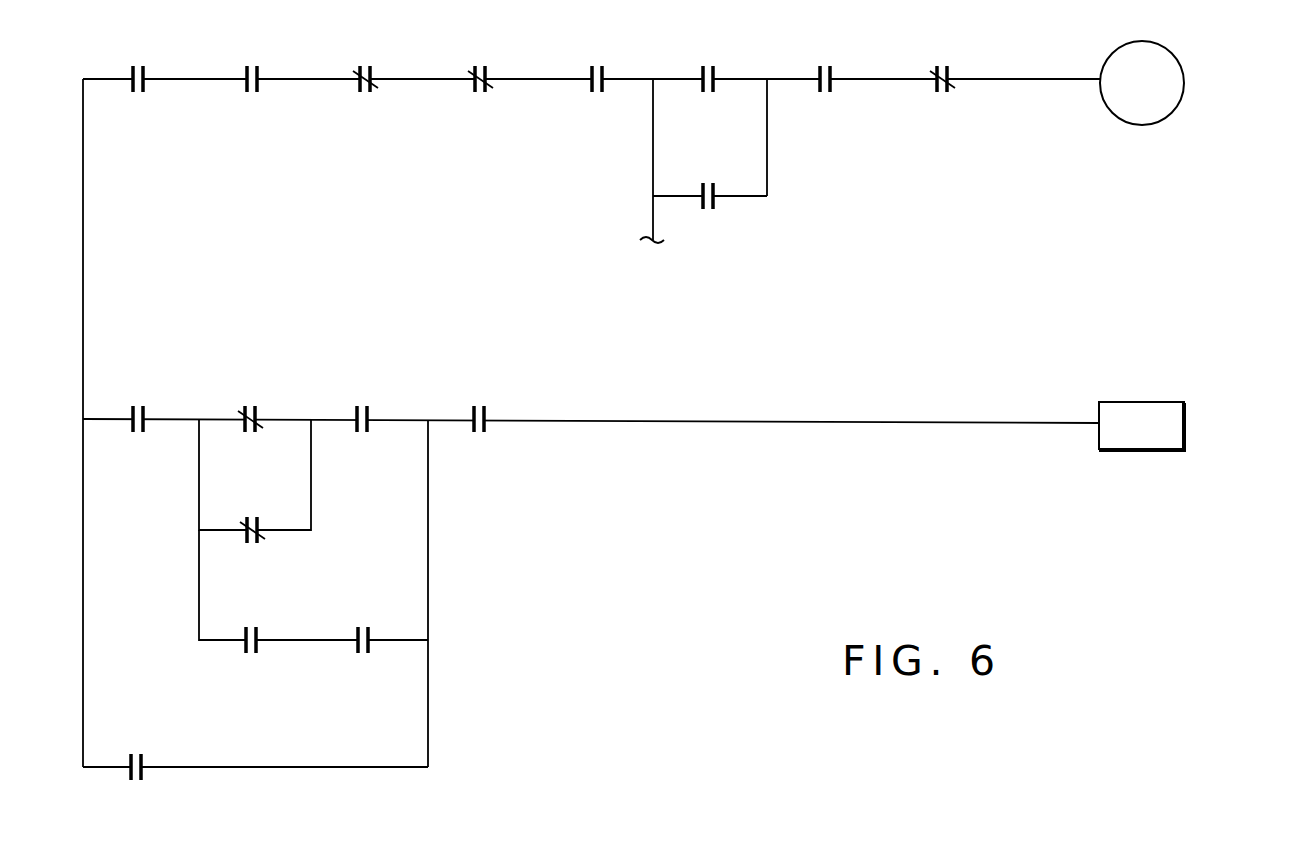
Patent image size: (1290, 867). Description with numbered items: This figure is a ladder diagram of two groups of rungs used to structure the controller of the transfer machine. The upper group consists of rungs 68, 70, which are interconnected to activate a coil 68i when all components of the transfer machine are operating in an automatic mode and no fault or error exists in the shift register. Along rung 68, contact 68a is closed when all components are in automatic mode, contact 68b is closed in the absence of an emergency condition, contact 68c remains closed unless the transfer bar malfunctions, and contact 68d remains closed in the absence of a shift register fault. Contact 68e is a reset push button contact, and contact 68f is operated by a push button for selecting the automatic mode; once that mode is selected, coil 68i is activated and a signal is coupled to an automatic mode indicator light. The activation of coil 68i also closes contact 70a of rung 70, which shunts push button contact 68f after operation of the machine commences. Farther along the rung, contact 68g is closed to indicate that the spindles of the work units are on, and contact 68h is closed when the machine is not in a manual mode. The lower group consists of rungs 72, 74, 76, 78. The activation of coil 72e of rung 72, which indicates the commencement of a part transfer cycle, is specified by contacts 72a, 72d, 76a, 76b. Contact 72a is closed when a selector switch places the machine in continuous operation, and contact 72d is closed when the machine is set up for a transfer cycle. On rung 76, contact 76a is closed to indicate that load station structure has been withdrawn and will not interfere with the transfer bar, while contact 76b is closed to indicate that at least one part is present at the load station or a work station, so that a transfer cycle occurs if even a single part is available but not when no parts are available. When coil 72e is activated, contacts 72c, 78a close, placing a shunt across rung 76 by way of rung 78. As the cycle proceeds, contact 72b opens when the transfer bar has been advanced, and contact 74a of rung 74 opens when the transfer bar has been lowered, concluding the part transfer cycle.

The rung 68 is at (873, 78).
The contact 68a is at (137, 64).
The contact 68b is at (251, 64).
The contact 68c is at (366, 64).
The contact 68d is at (493, 48).
The reset push button contact 68e is at (598, 64).
The push button contact 68f is at (709, 64).
The contact 68g is at (826, 64).
The contact 68h is at (958, 44).
The coil 68i is at (1130, 124).
The rung 70 is at (738, 195).
The contact 70a is at (708, 182).
The rung 72 is at (731, 418).
The contact 72a is at (165, 378).
The contact 72b is at (252, 405).
The contact 72c is at (366, 405).
The contact 72d is at (480, 405).
The coil 72e is at (1140, 401).
The rung 74 is at (287, 528).
The contact 74a is at (250, 517).
The rung 76 is at (292, 638).
The contact 76a is at (246, 627).
The contact 76b is at (364, 627).
The rung 78 is at (258, 766).
The contact 78a is at (138, 753).